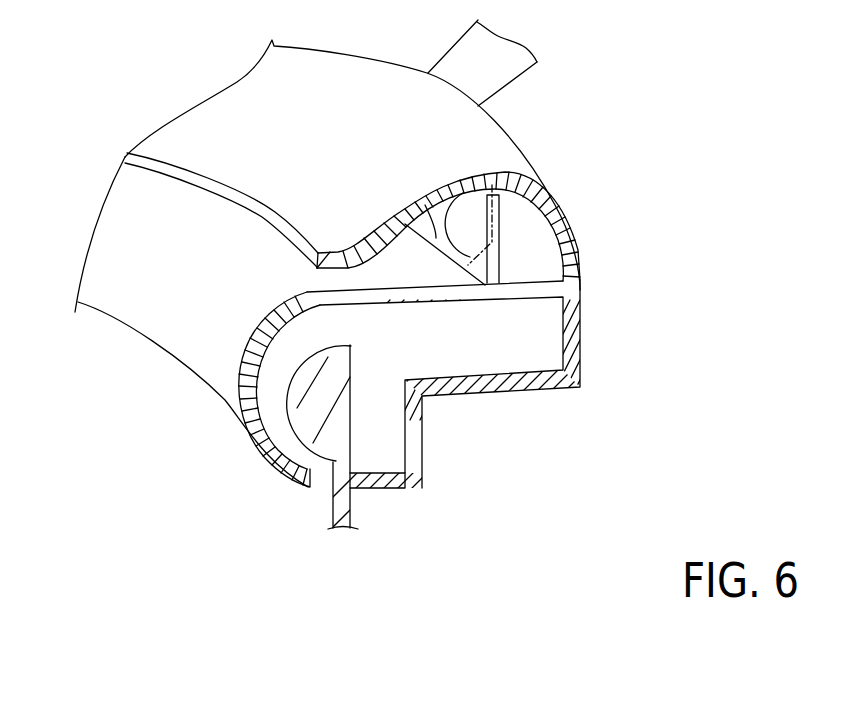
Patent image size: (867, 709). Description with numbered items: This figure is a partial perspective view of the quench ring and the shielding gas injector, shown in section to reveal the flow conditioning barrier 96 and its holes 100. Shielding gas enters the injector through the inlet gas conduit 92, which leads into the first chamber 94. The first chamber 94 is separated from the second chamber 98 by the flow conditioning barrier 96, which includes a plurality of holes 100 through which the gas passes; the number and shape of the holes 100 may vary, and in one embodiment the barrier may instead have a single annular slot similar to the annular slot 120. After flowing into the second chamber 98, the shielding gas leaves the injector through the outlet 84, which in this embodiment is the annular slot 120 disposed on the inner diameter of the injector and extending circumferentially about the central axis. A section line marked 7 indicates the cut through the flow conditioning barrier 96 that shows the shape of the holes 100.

The outlet 84 is at (112, 348).
The inlet gas conduit 92 is at (505, 90).
The first chamber 94 is at (541, 243).
The flow conditioning barrier 96 is at (487, 192).
The second chamber 98 is at (400, 273).
The holes 100 is at (425, 205).
The annular slot 120 is at (230, 202).
The section line 7- 7 is at (468, 265).